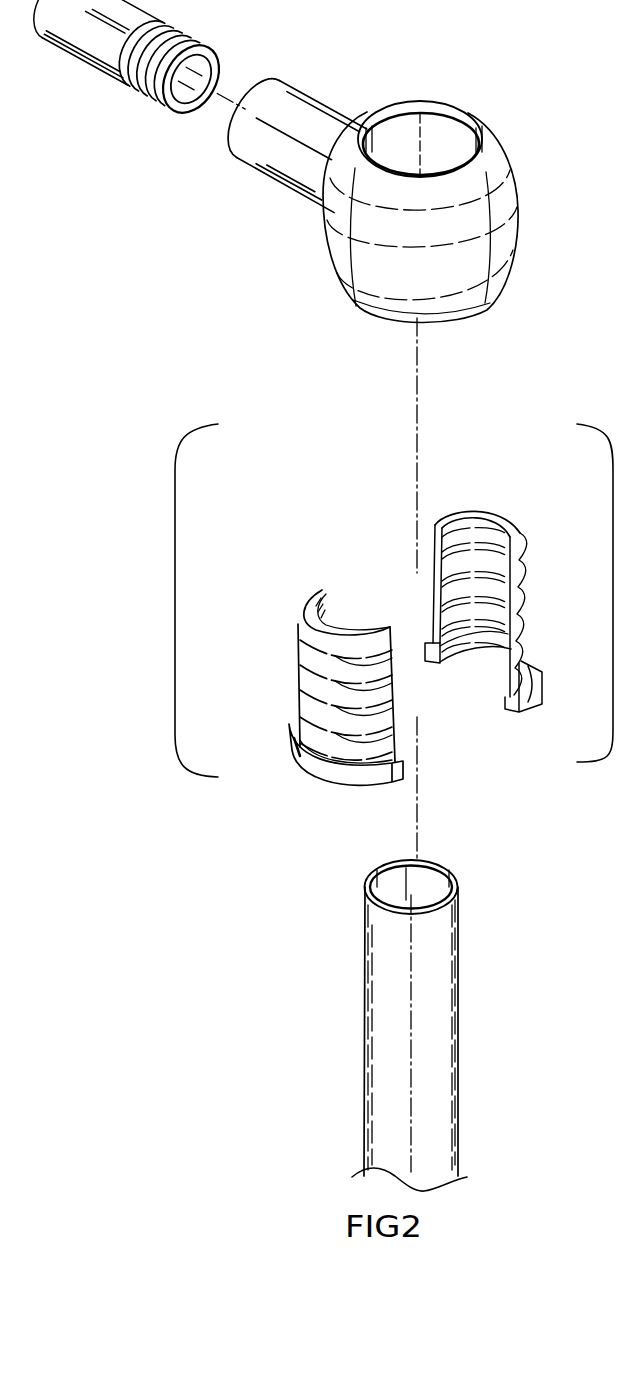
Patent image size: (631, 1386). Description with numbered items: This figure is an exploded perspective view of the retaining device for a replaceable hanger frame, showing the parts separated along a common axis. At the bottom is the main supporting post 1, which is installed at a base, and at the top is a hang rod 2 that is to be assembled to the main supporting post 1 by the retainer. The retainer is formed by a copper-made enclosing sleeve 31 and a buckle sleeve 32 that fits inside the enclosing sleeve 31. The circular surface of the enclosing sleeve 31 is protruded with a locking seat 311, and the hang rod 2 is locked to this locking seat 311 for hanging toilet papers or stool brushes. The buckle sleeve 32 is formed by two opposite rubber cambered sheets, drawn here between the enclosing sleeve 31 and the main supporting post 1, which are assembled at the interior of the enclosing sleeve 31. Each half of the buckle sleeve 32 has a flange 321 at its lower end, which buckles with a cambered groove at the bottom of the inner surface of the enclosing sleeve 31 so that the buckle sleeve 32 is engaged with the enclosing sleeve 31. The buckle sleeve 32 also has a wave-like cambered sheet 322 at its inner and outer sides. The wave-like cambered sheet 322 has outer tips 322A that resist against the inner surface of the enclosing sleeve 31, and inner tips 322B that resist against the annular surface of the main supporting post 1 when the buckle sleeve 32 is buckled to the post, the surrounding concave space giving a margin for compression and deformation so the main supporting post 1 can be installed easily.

The main supporting post 1 is at (390, 987).
The hang rod 2 is at (93, 43).
The enclosing sleeve 31 is at (503, 207).
The locking seat 311 is at (300, 113).
The buckle sleeve 32 is at (323, 597).
The flange 321 is at (297, 747).
The wave-like cambered sheet 322 is at (433, 553).
The outer tip 322A is at (307, 663).
The inner tip 322B is at (437, 558).